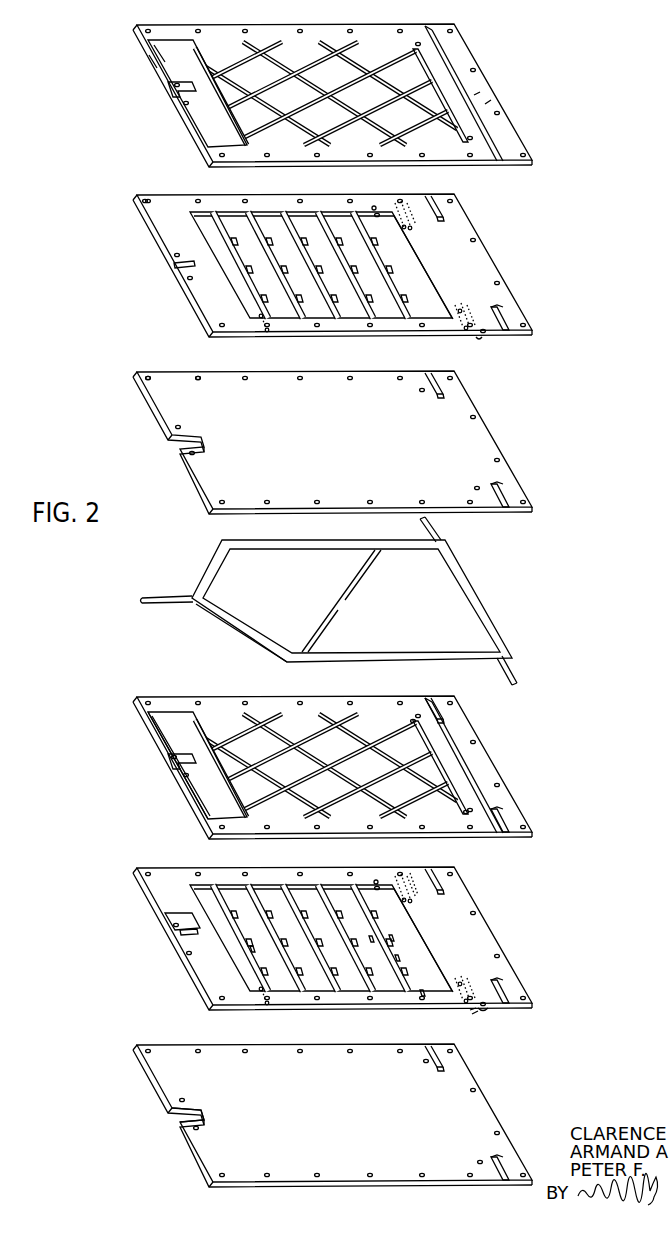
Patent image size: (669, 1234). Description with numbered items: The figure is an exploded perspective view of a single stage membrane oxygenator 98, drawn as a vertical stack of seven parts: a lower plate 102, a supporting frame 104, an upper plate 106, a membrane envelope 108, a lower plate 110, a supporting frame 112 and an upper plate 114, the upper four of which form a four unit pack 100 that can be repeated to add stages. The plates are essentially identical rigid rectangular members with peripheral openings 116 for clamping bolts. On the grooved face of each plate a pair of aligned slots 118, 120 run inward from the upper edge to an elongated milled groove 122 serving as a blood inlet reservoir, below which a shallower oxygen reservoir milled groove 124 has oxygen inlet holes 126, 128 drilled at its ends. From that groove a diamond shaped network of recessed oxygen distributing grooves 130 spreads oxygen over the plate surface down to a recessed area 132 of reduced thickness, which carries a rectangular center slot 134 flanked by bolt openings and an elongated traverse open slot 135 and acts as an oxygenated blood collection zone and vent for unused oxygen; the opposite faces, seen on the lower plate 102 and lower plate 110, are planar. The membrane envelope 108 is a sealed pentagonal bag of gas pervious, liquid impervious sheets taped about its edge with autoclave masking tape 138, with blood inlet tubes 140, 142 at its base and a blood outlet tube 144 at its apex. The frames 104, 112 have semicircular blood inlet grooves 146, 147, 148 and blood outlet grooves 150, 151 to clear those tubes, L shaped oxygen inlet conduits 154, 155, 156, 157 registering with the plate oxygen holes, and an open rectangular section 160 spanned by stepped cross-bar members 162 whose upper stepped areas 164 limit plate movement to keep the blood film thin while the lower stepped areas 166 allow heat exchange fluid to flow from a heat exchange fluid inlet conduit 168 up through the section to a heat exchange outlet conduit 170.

The single stage membrane oxygenator 98 is at (591, 796).
The four unit pack 100 is at (528, 57).
The lower plate 102 is at (496, 1110).
The supporting frame 104 is at (490, 928).
The upper plate 106 is at (493, 758).
The membrane envelope 108 is at (483, 592).
The lower plate 110 is at (493, 432).
The supporting frame 112 is at (493, 266).
The upper plate 114 is at (490, 89).
The openings 116 is at (147, 204).
The slot 118 is at (502, 839).
The slot 120 is at (428, 699).
The elongated milled groove 122 is at (487, 805).
The oxygen reservoir milled groove 124 is at (432, 752).
The oxygen inlet hole 126 is at (475, 490).
The oxygen inlet hole 128 is at (420, 391).
The oxygen distributing grooves 130 is at (250, 738).
The recessed area 132 is at (165, 735).
The center slot 134 is at (178, 772).
The elongated traverse open slot 135 is at (143, 729).
The autoclave masking tape 138 is at (252, 630).
The blood inlet tube 140 is at (504, 669).
The blood inlet tube 142 is at (422, 526).
The blood outlet tube 144 is at (178, 597).
The blood inlet groove 146 is at (506, 994).
The blood inlet groove 147 is at (516, 1008).
The blood inlet groove 148 is at (444, 882).
The blood outlet groove 150 is at (166, 915).
The blood outlet groove 151 is at (176, 946).
The oxygen inlet conduit 154 is at (470, 343).
The oxygen inlet conduit 155 is at (482, 1016).
The oxygen inlet conduit 156 is at (396, 206).
The oxygen inlet conduit 157 is at (405, 880).
The open rectangular section 160 is at (326, 986).
The stepped cross-bar member 162 is at (399, 931).
The upper stepped areas 164 is at (236, 905).
The lower stepped areas 166 is at (252, 950).
The heat exchange fluid inlet conduit 168 is at (263, 332).
The heat exchange outlet conduit 170 is at (372, 205).